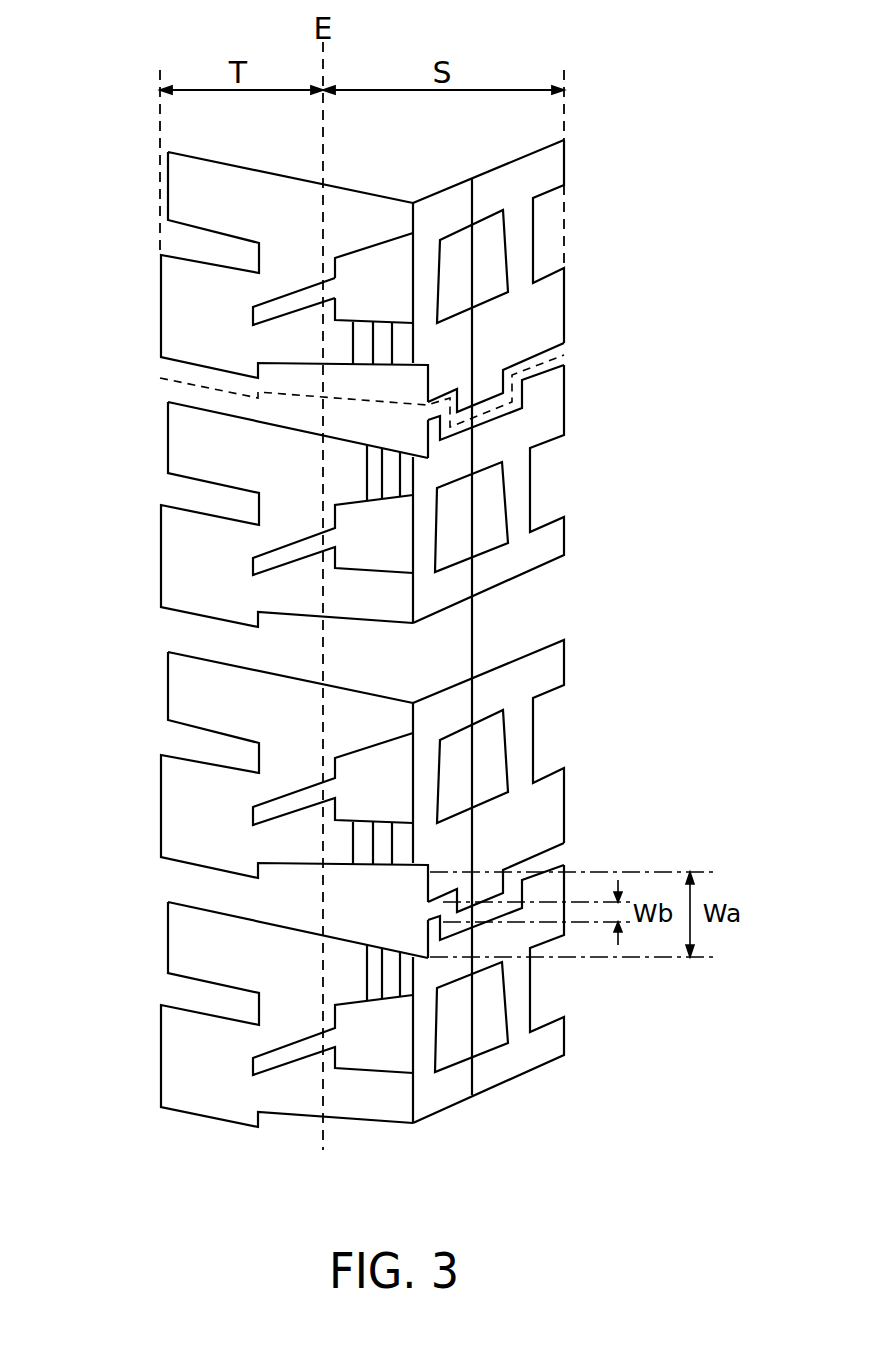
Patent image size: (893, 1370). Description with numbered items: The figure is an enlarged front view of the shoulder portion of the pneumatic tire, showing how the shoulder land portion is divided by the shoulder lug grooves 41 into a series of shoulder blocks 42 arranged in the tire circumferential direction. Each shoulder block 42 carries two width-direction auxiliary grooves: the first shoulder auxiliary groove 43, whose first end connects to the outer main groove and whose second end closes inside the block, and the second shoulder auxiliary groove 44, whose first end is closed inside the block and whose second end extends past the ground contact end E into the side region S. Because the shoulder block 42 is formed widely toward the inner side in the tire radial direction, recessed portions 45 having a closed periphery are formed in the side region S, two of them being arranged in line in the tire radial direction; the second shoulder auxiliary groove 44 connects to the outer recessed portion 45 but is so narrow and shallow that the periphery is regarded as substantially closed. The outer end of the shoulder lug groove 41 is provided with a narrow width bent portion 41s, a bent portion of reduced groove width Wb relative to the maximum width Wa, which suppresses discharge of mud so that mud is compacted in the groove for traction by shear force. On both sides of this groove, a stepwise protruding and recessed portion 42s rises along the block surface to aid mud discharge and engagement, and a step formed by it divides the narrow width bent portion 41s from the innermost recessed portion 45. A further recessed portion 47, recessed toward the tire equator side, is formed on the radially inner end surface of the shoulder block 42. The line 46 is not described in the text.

The shoulder lug groove 41 is at (361, 405).
The narrow width bent portion 41s is at (557, 360).
The shoulder block 42 is at (311, 746).
The protruding and recessed portion 42s is at (373, 963).
The first shoulder auxiliary groove 43 is at (361, 266).
The second shoulder auxiliary groove 44 is at (270, 318).
The recessed portion 45 is at (455, 253).
The edge line 46 is at (472, 1082).
The recessed portion 47 is at (543, 242).